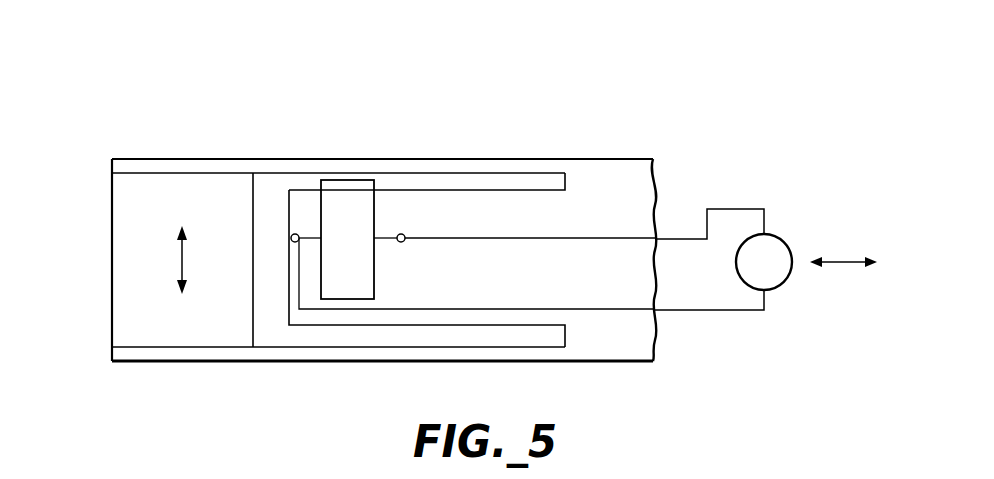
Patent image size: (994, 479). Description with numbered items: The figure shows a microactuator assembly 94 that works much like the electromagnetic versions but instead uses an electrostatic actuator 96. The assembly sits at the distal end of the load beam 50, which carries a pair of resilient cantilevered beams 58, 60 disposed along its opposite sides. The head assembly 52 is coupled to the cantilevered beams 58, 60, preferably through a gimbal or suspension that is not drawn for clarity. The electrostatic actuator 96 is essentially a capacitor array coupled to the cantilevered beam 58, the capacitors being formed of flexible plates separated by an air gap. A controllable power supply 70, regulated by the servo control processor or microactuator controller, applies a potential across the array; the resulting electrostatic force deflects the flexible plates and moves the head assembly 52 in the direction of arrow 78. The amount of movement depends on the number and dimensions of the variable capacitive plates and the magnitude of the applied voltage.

The microactuator assembly 94 is at (261, 126).
The cantilevered beam 58 is at (533, 167).
The cantilevered beam 60 is at (465, 363).
The load beam 50 is at (572, 355).
The head assembly 52 is at (106, 338).
The arrow 78 is at (182, 260).
The electrostatic actuator 96 is at (363, 280).
The power supply 70 is at (787, 245).